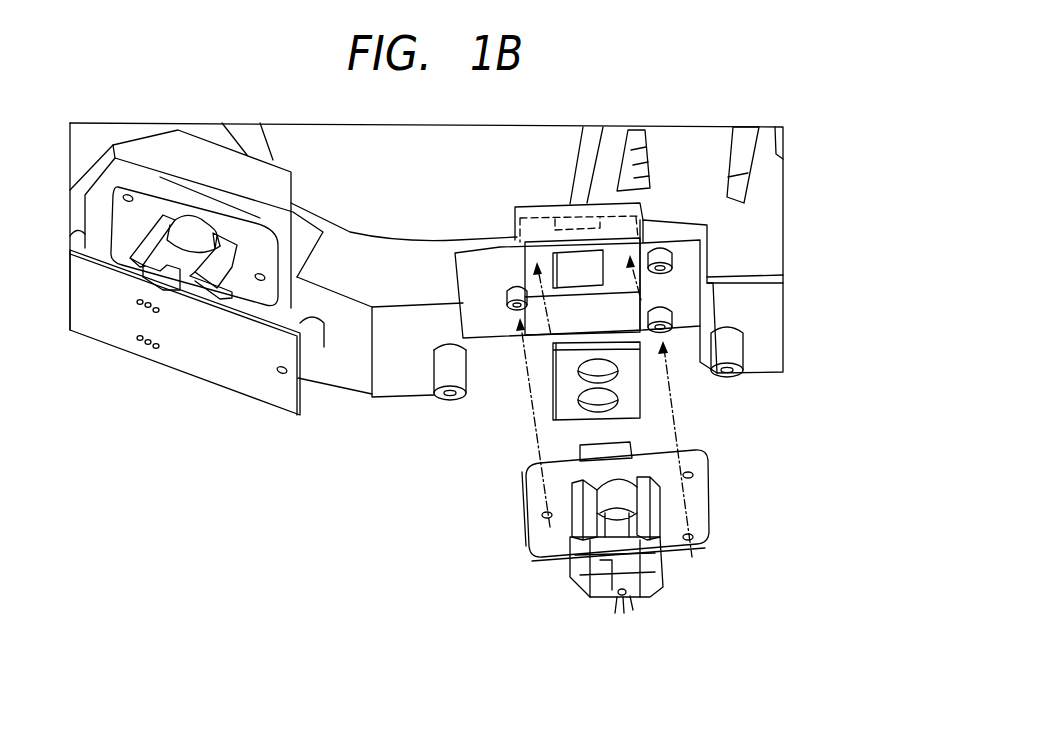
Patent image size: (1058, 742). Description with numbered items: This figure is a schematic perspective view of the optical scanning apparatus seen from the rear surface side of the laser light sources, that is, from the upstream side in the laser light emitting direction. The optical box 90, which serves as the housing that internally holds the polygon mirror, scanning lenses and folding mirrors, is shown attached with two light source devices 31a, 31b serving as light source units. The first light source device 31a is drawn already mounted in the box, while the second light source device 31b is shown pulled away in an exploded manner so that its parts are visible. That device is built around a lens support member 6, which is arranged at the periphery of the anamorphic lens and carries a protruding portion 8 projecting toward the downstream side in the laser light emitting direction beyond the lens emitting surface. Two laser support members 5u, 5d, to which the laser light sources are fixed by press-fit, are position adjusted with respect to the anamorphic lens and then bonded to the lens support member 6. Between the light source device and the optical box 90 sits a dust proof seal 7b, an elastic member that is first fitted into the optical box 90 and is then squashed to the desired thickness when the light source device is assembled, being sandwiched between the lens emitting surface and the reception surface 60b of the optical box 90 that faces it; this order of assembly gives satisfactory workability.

The optical box 90 is at (767, 307).
The reception surface 60b is at (613, 277).
The light source device 31a is at (257, 297).
The light source device 31b is at (673, 520).
The dust proof seal 7b is at (565, 380).
The protruding portion 8 is at (627, 447).
The lens support member 6 is at (698, 497).
The laser support member 5d is at (608, 593).
The laser support member 5u is at (650, 588).